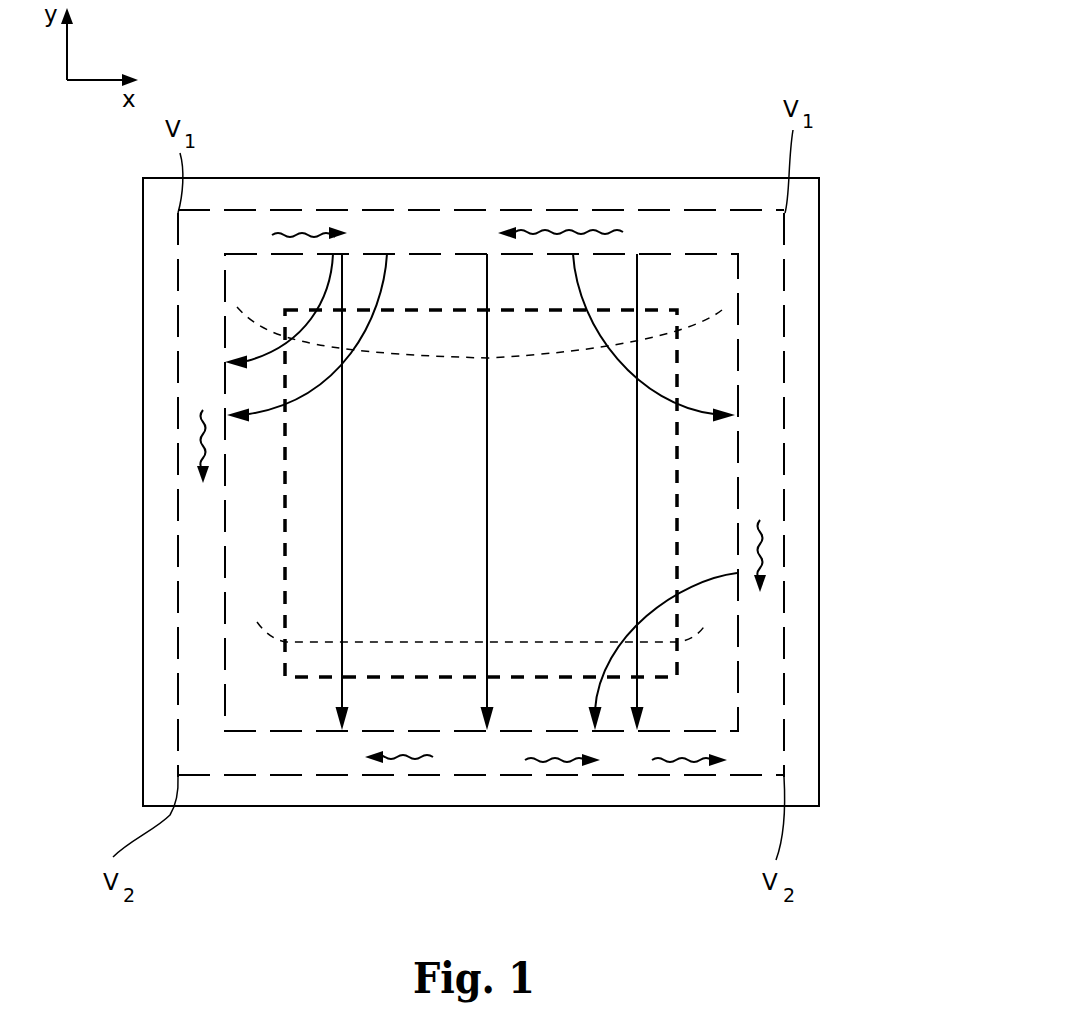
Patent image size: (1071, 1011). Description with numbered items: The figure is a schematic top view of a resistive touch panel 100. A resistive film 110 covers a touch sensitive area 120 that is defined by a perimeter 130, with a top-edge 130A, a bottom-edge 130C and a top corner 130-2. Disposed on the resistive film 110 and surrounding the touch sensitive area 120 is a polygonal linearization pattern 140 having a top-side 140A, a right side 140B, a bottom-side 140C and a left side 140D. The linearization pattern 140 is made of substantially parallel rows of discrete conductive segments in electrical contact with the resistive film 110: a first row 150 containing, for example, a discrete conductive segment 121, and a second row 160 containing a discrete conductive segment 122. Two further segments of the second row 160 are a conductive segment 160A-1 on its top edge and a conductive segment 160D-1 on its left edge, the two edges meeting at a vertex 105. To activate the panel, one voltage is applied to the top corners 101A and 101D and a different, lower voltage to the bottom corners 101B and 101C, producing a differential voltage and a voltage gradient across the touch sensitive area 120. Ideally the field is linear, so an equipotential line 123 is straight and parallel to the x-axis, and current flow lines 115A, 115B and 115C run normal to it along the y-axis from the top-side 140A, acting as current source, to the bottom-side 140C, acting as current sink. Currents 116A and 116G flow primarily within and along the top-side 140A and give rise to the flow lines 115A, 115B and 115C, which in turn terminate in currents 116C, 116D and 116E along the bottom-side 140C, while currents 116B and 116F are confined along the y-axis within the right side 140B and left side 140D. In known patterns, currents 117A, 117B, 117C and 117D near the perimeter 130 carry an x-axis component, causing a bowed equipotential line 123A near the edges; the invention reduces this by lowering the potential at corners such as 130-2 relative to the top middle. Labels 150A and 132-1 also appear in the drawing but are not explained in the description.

The touch panel 100 is at (832, 64).
The vertex 105 is at (220, 233).
The resistive film 110 is at (810, 603).
The current flow line 115A is at (342, 657).
The current flow line 115B is at (487, 660).
The current flow line 115C is at (637, 482).
The current 116A is at (607, 230).
The current 116B is at (760, 520).
The current 116C is at (677, 763).
The current 116D is at (567, 763).
The current 116E is at (402, 767).
The current 116F is at (202, 450).
The current 116G is at (313, 232).
The current line 117A is at (273, 408).
The current line 117B is at (657, 390).
The current line 117C is at (268, 352).
The current line 117D is at (603, 687).
The touch sensitive area 120 is at (525, 380).
The discrete conductive segment 121 is at (784, 650).
The discrete conductive segment 122 is at (737, 678).
The equipotential line 123 is at (530, 643).
The equipotential line 123A is at (726, 305).
The perimeter 130 is at (452, 308).
The top-edge 130A is at (663, 307).
The top corner 130-2 is at (225, 254).
The bottom-edge 130C is at (287, 733).
The electrode frame corner 132-1 is at (737, 254).
The linearization pattern 140 is at (178, 423).
The top-side 140A is at (398, 209).
The side 140B is at (784, 412).
The bottom-side 140C is at (327, 777).
The side 140D is at (178, 580).
The first row 150 is at (178, 527).
The pad region 150A is at (487, 210).
The second row 160 is at (225, 624).
The conductive segment 160A-1 is at (358, 253).
The conductive segment 160D-1 is at (223, 361).
The top corner 101A is at (784, 210).
The bottom corner 101B is at (787, 775).
The bottom corner 101C is at (178, 777).
The top corner 101D is at (178, 210).